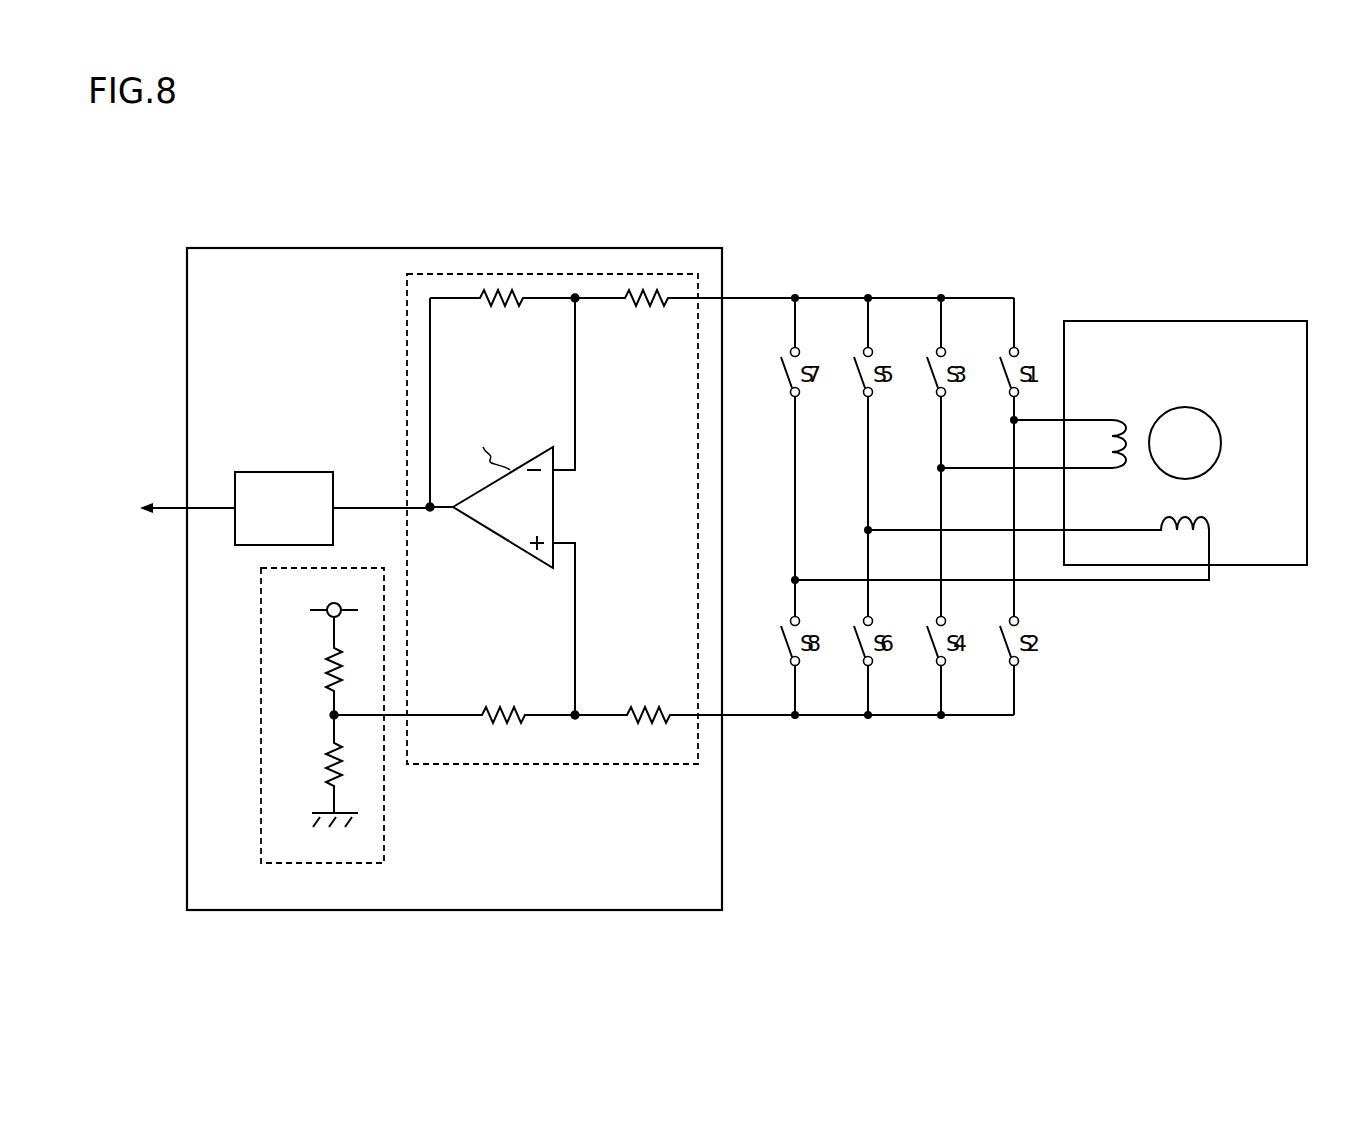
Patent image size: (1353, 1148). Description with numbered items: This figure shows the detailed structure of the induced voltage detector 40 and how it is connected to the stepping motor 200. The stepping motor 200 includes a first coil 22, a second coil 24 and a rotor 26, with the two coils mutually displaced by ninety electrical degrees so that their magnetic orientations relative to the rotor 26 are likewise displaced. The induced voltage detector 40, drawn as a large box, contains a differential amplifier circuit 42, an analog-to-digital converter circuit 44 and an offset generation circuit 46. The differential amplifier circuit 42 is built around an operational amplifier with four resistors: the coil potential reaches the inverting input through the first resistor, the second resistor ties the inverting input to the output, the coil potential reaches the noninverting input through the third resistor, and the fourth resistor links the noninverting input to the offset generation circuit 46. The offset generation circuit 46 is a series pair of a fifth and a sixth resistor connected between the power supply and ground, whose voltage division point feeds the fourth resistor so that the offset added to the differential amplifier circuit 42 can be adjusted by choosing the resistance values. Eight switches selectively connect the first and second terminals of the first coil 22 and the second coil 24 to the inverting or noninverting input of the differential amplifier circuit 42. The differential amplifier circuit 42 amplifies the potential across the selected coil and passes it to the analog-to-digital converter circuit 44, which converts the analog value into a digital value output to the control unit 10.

The control unit 10 is at (172, 510).
The first coil 22 is at (1113, 419).
The second coil 24 is at (1212, 517).
The rotor 26 is at (1210, 410).
The induced voltage detector 40 is at (672, 249).
The differential amplifier circuit 42 is at (404, 325).
The analog-to-digital converter (ADC) circuit 44 is at (310, 472).
The offset generation circuit 46 is at (261, 616).
The stepping motor 200 is at (1258, 321).